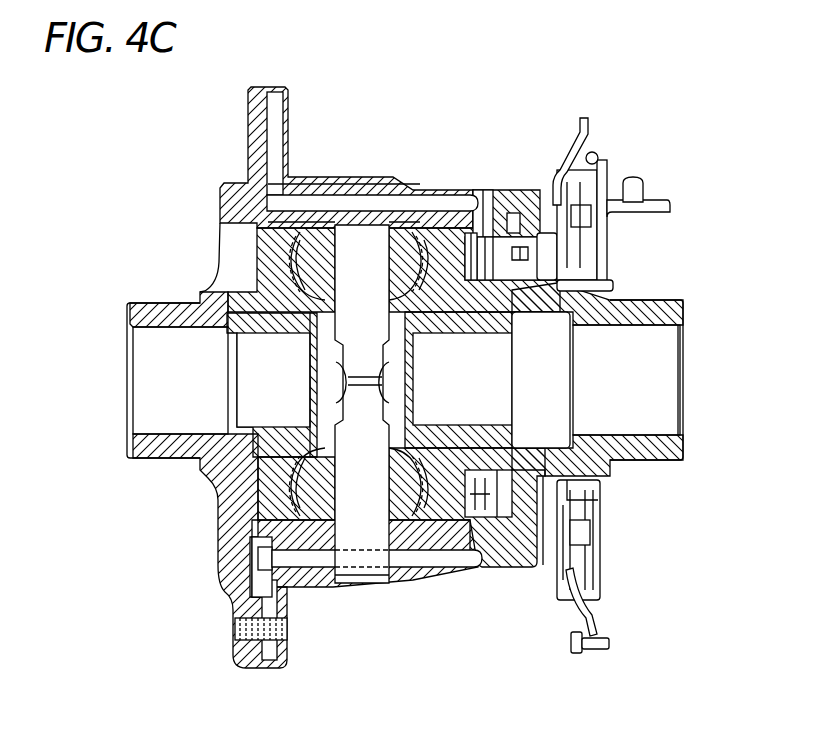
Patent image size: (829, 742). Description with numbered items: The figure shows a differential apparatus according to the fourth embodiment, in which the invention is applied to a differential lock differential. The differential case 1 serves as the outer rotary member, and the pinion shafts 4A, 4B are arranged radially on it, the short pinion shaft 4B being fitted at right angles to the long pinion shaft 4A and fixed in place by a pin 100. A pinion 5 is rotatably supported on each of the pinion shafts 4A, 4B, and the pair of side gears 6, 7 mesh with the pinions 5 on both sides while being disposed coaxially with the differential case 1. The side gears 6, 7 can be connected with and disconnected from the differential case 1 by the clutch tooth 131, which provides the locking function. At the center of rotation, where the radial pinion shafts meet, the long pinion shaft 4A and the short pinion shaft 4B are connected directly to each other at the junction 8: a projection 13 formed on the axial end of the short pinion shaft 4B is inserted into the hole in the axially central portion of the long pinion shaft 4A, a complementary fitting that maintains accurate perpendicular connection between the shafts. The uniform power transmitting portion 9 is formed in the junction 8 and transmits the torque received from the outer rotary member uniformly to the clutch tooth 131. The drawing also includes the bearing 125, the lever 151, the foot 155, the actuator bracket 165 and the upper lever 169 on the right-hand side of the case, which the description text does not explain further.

The differential case 1 is at (333, 185).
The long pinion shaft 4A is at (410, 362).
The short pinion shaft 4B is at (363, 178).
The pinion 5 is at (385, 260).
The side gear 6 is at (262, 290).
The side gear 7 is at (457, 513).
The junction 8 is at (389, 406).
The uniform power transmitting portion 9 is at (345, 365).
The projection 13 is at (345, 396).
The pin 100 is at (409, 200).
The bearing 125 is at (498, 243).
The clutch tooth 131 is at (471, 231).
The actuating lever 151 is at (570, 607).
The lever foot 155 is at (612, 640).
The actuator bracket 165 is at (604, 546).
The upper lever 169 is at (560, 195).